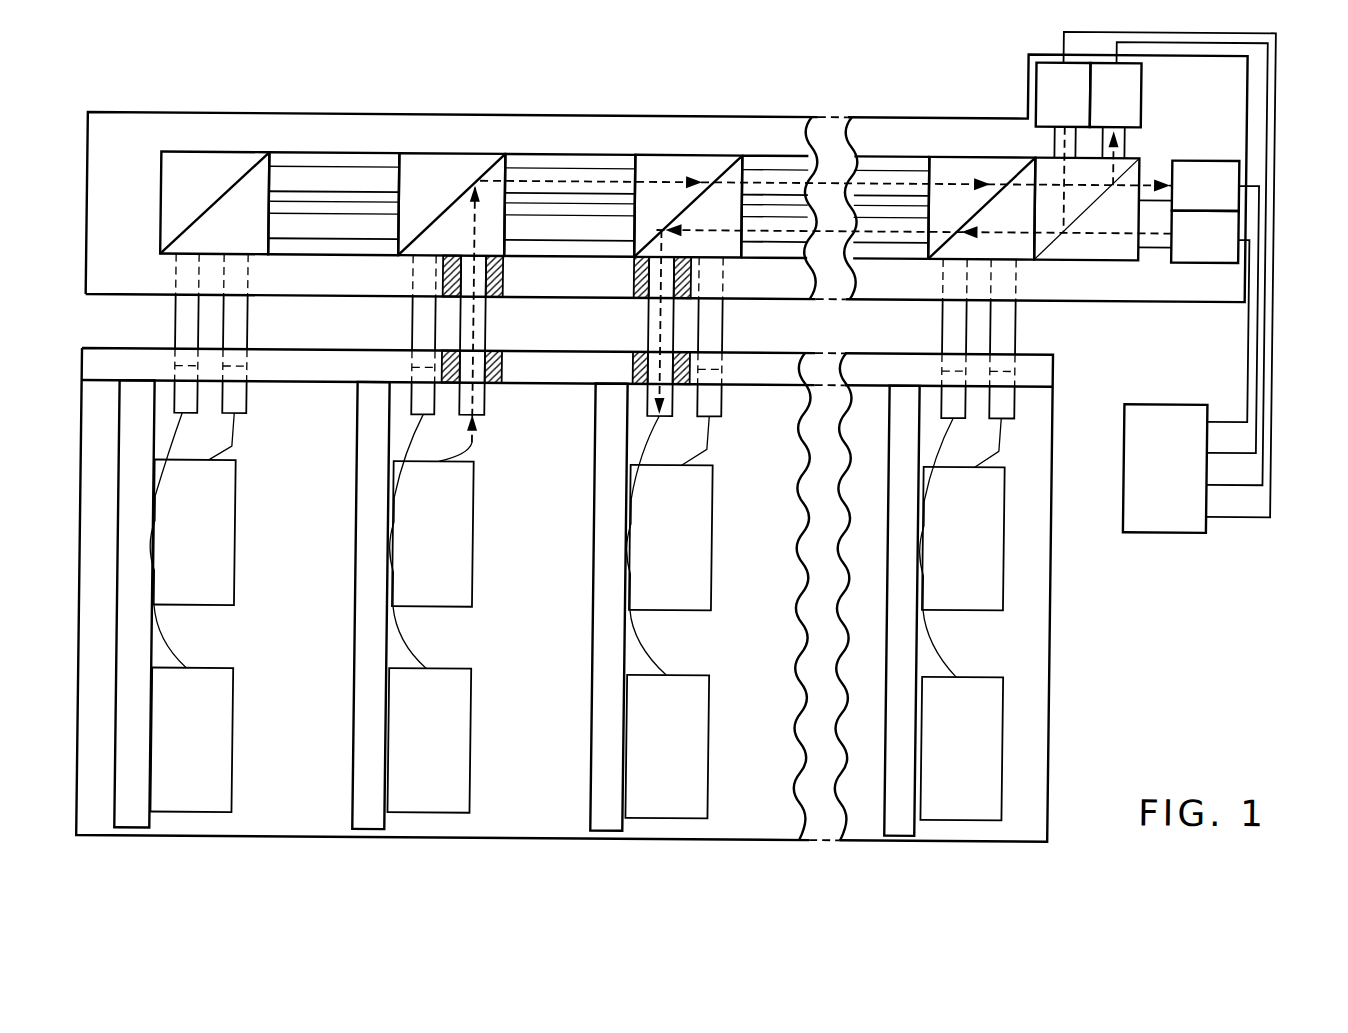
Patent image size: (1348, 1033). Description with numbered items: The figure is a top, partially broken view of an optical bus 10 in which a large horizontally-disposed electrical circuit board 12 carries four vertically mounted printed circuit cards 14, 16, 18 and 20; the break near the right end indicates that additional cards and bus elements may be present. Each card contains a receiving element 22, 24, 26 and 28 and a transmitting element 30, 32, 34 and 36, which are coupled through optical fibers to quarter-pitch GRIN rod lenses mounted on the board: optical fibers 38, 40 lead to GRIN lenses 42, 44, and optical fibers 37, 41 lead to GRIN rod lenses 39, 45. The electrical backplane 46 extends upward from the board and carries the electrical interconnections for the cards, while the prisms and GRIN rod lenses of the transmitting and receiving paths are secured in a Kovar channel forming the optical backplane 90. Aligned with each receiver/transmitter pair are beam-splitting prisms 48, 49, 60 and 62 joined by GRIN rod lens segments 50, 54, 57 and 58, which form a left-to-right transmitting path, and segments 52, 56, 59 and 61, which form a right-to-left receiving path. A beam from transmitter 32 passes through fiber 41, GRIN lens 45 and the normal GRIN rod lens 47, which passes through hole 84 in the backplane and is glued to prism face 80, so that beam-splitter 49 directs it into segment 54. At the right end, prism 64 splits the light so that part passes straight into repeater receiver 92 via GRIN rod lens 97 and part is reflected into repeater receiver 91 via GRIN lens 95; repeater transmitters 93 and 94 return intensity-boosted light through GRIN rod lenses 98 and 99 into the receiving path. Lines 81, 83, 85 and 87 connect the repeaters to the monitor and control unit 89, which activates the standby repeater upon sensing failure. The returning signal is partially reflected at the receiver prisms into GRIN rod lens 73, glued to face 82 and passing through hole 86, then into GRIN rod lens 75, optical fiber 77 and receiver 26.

The optical bus 10 is at (572, 92).
The electrical circuit board 12 is at (276, 795).
The printed circuit card 14 is at (123, 660).
The printed circuit card 16 is at (372, 648).
The printed circuit card 18 is at (605, 648).
The printed circuit card 20 is at (897, 600).
The receiving element 22 is at (181, 736).
The receiving element 24 is at (419, 748).
The receiving element 26 is at (663, 756).
The receiving element 28 is at (948, 754).
The transmitting element 30 is at (186, 562).
The transmitting element 32 is at (426, 557).
The transmitting element 34 is at (661, 551).
The transmitting element 36 is at (954, 549).
The optical fiber 37 is at (430, 632).
The optical fiber 38 is at (190, 632).
The GRIN rod lens 39 is at (410, 400).
The optical fiber 40 is at (228, 445).
The optical fiber 41 is at (466, 446).
The GRIN rod lens 42 is at (170, 400).
The GRIN rod lens 44 is at (244, 405).
The GRIN rod lens 45 is at (487, 400).
The electrical backplane 46 is at (142, 348).
The GRIN rod lens 47 is at (488, 318).
The beam-splitting prism 48 is at (228, 164).
The beam-splitter 49 is at (425, 163).
The GRIN rod lens segment 50 is at (308, 168).
The GRIN rod lens segment 52 is at (318, 233).
The GRIN rod lens segment 54 is at (610, 171).
The GRIN rod lens segment 56 is at (575, 230).
The GRIN rod lens segment 57 is at (795, 170).
The GRIN rod lens segment 58 is at (890, 169).
The GRIN rod lens segment 59 is at (788, 238).
The beam-splitting prism 60 is at (690, 161).
The GRIN rod lens segment 61 is at (872, 237).
The beam-splitting prism 62 is at (948, 159).
The beam-splitting prism 64 is at (1094, 246).
The GRIN rod lens 73 is at (650, 318).
The GRIN rod lens 75 is at (640, 405).
The optical fiber 77 is at (640, 445).
The face of beam-splitting prism 80 is at (403, 253).
The line 81 is at (1275, 88).
The face of beam-splitting prism 82 is at (738, 260).
The line 83 is at (1266, 127).
The hole 84 is at (448, 356).
The line 85 is at (1247, 322).
The hole 86 is at (640, 355).
The line 87 is at (1255, 352).
The monitor and control unit 89 is at (1152, 475).
The optical backplane 90 is at (150, 132).
The repeater receiver 91 is at (1099, 107).
The repeater receiver 92 is at (1189, 193).
The repeater transmitter 93 is at (1046, 107).
The repeater transmitter 94 is at (1189, 245).
The GRIN lens 95 is at (1125, 138).
The GRIN rod lens 97 is at (1160, 167).
The GRIN rod lens 98 is at (1050, 138).
The GRIN rod lens 99 is at (1148, 250).